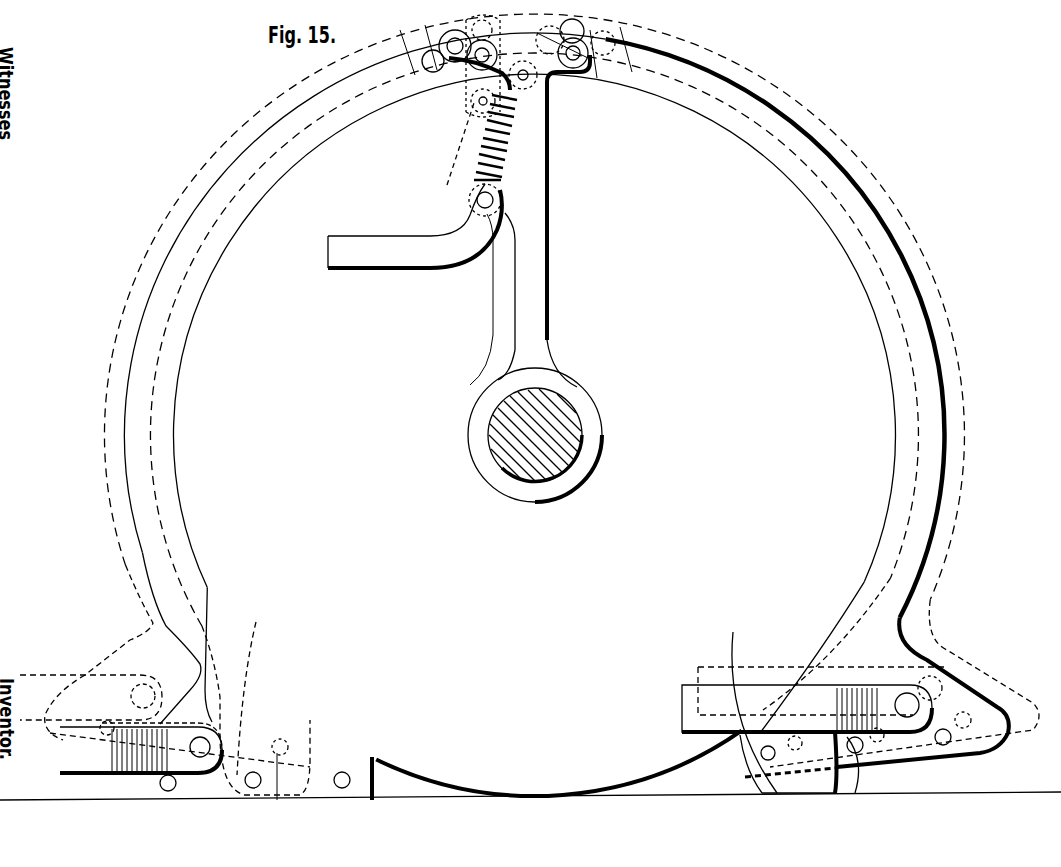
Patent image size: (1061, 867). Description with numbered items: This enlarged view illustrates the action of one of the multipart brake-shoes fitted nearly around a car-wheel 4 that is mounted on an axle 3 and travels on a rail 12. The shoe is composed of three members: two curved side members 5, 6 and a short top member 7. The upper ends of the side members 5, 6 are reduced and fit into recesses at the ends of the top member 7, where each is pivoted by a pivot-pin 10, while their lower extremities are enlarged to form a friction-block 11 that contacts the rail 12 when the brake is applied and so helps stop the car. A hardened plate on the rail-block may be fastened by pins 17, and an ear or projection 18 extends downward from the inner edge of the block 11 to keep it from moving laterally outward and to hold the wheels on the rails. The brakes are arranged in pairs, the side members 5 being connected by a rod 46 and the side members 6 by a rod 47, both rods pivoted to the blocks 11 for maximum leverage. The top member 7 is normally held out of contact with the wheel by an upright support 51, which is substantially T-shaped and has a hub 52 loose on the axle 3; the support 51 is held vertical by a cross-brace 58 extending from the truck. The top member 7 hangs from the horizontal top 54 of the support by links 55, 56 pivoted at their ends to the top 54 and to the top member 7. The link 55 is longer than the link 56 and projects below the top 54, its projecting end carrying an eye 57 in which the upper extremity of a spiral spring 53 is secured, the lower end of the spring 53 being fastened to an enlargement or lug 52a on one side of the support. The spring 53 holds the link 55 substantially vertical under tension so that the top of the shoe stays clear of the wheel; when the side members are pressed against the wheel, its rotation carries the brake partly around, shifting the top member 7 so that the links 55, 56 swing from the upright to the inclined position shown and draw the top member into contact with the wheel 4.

The axle 3 is at (566, 445).
The car-wheel 4 is at (870, 452).
The curved side member 5 is at (137, 370).
The curved side member 6 is at (925, 370).
The top member 7 is at (580, 68).
The pivot-pin 10 is at (432, 63).
The friction-block 11 is at (253, 725).
The rail 12 is at (707, 793).
The pin 17 is at (345, 772).
The ear or projection 18 is at (548, 694).
The rod 46 is at (90, 733).
The rod 47 is at (675, 697).
The upright support 51 is at (528, 215).
The hub 52 is at (578, 400).
The enlargement or lug 52a is at (508, 212).
The spiral spring 53 is at (513, 143).
The horizontal top 54 is at (640, 30).
The link 55 is at (493, 83).
The link 56 is at (533, 52).
The eye 57 is at (538, 84).
The cross-brace 58 is at (372, 255).